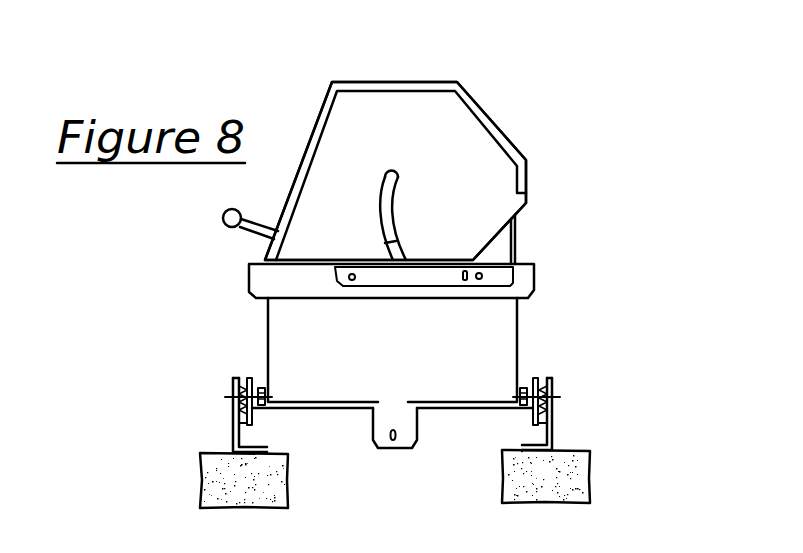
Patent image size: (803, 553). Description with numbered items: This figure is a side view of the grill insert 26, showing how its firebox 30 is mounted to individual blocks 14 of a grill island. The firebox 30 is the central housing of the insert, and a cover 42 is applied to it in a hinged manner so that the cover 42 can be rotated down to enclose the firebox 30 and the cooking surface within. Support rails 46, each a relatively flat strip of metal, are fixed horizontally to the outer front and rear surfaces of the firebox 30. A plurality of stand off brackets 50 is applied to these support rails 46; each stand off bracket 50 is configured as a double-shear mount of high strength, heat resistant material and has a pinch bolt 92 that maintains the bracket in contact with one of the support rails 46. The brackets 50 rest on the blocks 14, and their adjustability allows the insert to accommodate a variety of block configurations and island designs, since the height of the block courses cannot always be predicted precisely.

The grill insert 26 is at (530, 122).
The cover 42 is at (425, 148).
The firebox 30 is at (413, 359).
The pinch bolt 92 is at (260, 386).
The support rail 46 is at (240, 378).
The stand off bracket 50 is at (552, 377).
The block 14 is at (220, 482).